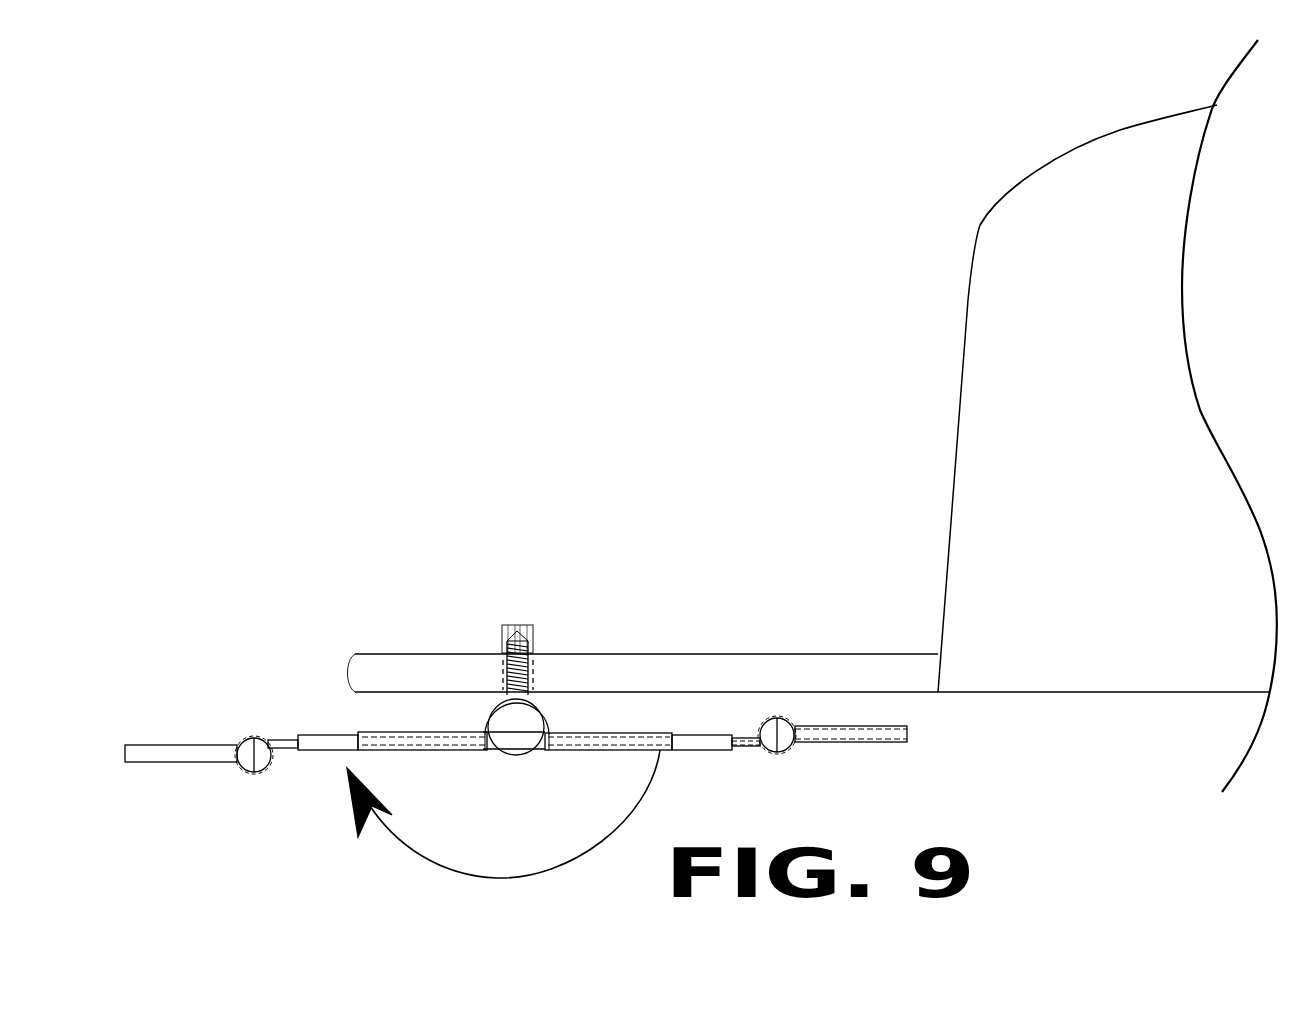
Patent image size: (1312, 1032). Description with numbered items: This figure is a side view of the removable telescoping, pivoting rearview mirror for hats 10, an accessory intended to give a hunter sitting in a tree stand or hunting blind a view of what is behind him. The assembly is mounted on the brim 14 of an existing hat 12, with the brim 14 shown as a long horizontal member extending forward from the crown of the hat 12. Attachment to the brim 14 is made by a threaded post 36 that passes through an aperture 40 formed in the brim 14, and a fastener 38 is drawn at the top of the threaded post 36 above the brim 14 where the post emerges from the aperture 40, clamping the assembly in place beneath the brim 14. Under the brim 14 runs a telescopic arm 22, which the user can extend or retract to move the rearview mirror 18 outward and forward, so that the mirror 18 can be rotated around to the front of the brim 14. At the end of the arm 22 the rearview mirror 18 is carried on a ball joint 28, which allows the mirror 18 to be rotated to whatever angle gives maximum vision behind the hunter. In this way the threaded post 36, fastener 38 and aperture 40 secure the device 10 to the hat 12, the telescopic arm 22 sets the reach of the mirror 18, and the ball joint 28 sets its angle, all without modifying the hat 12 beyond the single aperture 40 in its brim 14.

The removable telescoping, pivoting rearview mirror for hats 10 is at (291, 201).
The hat 12 is at (980, 227).
The brim 14 is at (616, 657).
The rearview mirror 18 is at (197, 745).
The telescopic arm 22 is at (320, 748).
The ball joint 28 is at (254, 740).
The threaded post 36 is at (530, 665).
The screw 38 is at (517, 623).
The aperture 40 is at (502, 660).